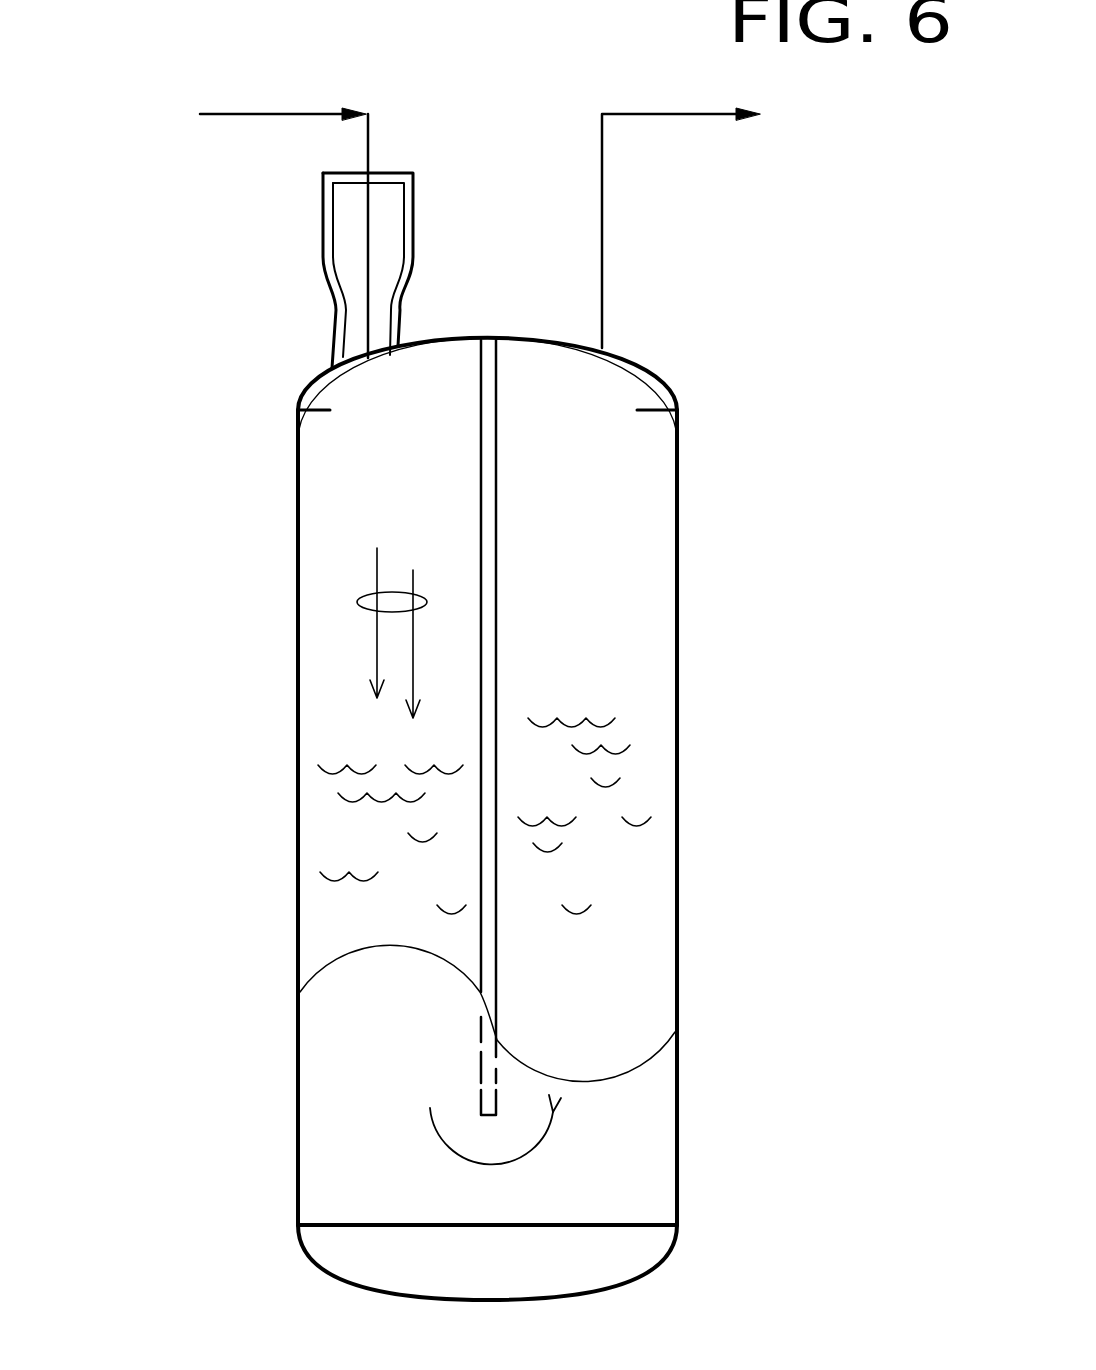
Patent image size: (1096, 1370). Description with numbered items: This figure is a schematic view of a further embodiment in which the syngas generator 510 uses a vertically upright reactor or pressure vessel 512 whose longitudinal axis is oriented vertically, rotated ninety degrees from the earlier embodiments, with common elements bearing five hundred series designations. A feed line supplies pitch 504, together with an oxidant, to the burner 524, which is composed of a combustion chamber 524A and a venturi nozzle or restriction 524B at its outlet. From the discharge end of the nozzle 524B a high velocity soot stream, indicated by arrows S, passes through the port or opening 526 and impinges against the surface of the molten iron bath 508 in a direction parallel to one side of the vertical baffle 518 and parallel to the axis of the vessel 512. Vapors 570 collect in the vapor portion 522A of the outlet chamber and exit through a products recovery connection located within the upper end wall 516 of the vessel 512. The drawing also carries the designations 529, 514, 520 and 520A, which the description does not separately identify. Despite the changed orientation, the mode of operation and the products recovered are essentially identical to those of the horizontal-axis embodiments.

The pitch 504 is at (209, 118).
The pitch inlet line 529 is at (310, 220).
The burner 524 is at (397, 280).
The combustion chamber 524A is at (390, 217).
The venturi nozzle 524B is at (382, 325).
The port 526 is at (378, 356).
The upper end wall 516 is at (642, 388).
The syngas generator 510 is at (780, 431).
The vertical baffle 518 is at (498, 634).
The vessel wall 514 is at (680, 633).
The pressure vessel 512 is at (680, 720).
The molten iron bath 508 is at (665, 797).
The downflow chamber 520 is at (320, 698).
The downflow zone 520A is at (425, 488).
The vapor portion 522A is at (603, 521).
The soot stream S is at (357, 602).
The vapors 570 is at (458, 1158).